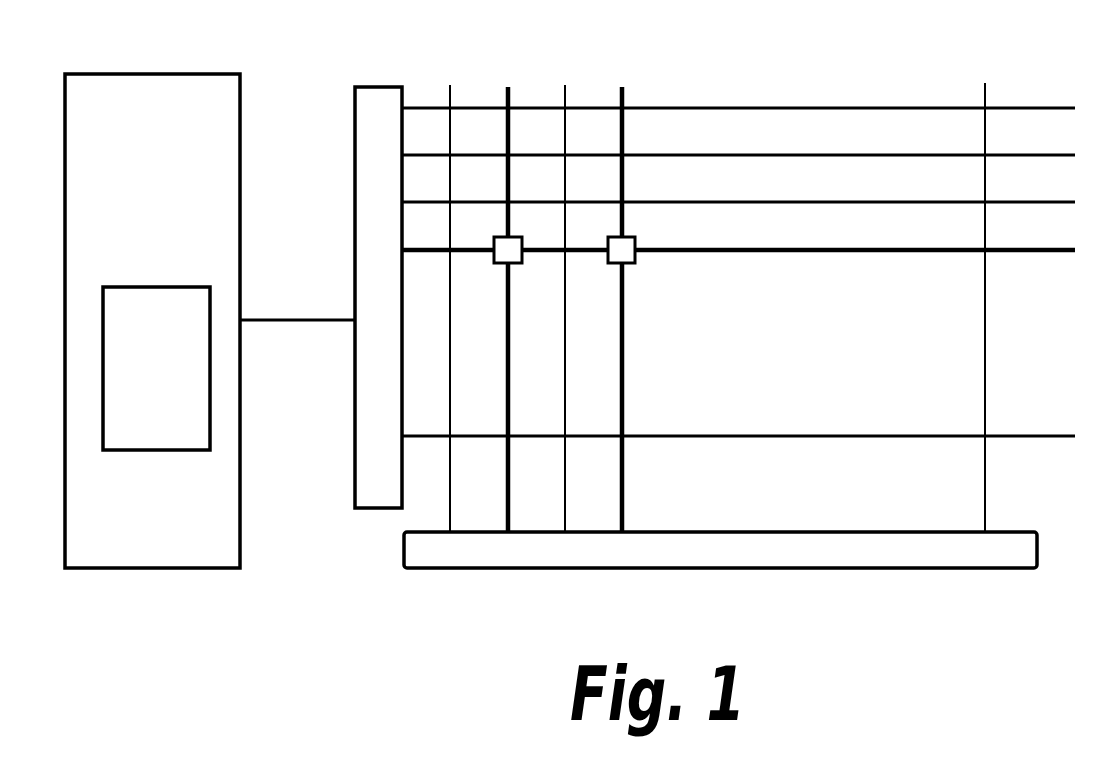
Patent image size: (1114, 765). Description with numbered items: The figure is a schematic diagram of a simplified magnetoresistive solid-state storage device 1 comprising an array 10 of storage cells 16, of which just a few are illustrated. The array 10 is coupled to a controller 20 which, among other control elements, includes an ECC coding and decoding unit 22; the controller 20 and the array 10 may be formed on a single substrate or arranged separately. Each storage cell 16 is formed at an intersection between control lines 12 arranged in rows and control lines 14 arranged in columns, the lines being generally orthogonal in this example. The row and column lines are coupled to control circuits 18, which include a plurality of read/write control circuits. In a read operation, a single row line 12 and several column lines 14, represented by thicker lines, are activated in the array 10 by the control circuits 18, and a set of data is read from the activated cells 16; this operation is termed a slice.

The magnetoresistive solid-state storage device 1 is at (403, 640).
The array 10 is at (930, 595).
The control lines 12 is at (855, 246).
The control lines 14 is at (623, 90).
The storage cells 16 is at (632, 241).
The control circuits 18 is at (373, 93).
The controller 20 is at (227, 205).
The ECC coding and decoding unit 22 is at (200, 408).